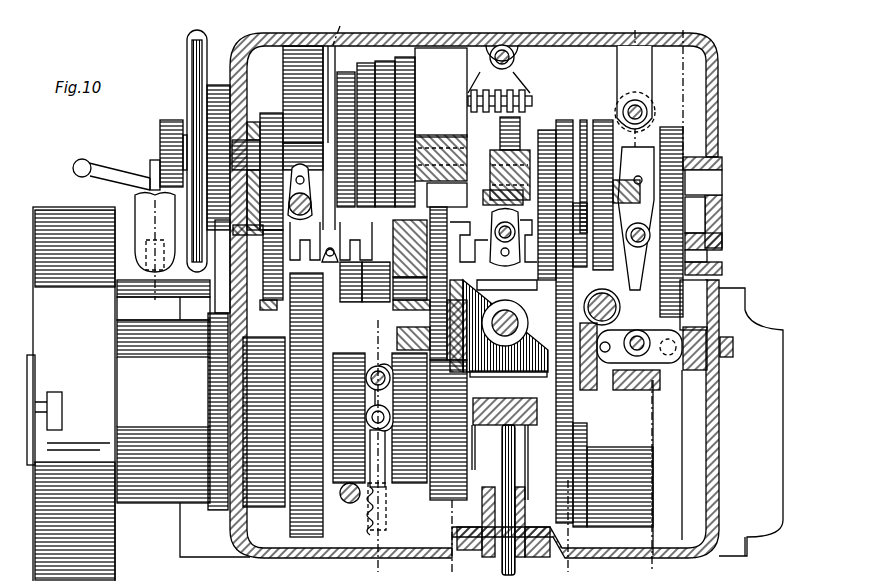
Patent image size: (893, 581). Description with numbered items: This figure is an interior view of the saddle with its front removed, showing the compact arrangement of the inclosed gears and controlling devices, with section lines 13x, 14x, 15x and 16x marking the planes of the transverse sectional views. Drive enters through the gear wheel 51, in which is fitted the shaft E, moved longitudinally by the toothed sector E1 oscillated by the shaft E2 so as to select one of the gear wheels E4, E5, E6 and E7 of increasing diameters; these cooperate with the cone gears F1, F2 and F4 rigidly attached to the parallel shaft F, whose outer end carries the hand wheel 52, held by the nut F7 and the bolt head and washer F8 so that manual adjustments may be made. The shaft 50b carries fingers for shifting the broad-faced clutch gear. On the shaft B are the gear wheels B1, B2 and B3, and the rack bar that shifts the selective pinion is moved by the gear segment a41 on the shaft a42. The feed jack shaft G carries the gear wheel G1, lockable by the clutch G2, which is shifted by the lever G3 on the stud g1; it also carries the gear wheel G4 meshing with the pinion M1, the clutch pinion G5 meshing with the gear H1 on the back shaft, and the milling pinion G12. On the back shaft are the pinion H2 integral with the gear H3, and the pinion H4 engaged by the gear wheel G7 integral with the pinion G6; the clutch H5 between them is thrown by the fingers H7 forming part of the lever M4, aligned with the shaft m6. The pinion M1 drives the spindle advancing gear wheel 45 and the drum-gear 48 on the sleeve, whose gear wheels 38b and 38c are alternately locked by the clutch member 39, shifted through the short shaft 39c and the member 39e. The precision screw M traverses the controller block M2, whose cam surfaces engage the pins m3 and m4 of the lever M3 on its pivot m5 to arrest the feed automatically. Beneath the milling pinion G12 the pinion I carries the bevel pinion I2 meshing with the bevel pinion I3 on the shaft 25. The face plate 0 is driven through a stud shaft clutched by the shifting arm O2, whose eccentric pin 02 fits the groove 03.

The hand wheel 52 is at (190, 50).
The gear wheel 51 is at (297, 80).
The nut F7 is at (170, 137).
The bolt head and washer F8 is at (155, 143).
The shifting arm O2 is at (110, 170).
The face plate 0 is at (71, 394).
The eccentric pin 02 is at (104, 283).
The groove 03 is at (110, 300).
The gear wheel E4 is at (355, 72).
The gear wheel E5 is at (366, 63).
The gear wheel E6 is at (387, 61).
The gear wheel E7 is at (412, 80).
The shaft F is at (298, 168).
The gear F1 is at (400, 96).
The gear F2 is at (403, 118).
The gear F4 is at (400, 153).
The milling pinion G12 is at (441, 133).
The clutch G2 is at (335, 280).
The bevel pinion I3 is at (500, 400).
The pinion I is at (411, 313).
The gear wheel 38c is at (445, 505).
The stud g1 is at (347, 290).
The gear wheel G4 is at (380, 295).
The gear wheel 38b is at (283, 500).
The gear wheel G1 is at (268, 300).
The shaft 50b is at (262, 235).
The short shaft 39c is at (375, 370).
The clutch member 39 is at (370, 400).
The member 39e is at (381, 433).
The section line 13x is at (350, 294).
The section line 15x is at (502, 45).
The section line 14x is at (597, 294).
The section line 16x is at (666, 294).
The shaft E is at (535, 100).
The toothed sector E1 is at (514, 78).
The shaft E2 is at (522, 45).
The gear wheel B1 is at (490, 155).
The gear H1 is at (548, 138).
The gear H3 is at (620, 130).
The pinion H2 is at (582, 237).
The gear wheel B2 is at (573, 120).
The shaft a42 is at (628, 113).
The gear segment a41 is at (650, 135).
The pinion H4 is at (690, 160).
The clutch H5 is at (700, 135).
The gear wheel B3 is at (718, 100).
The fingers H7 is at (722, 165).
The lever M4 is at (722, 190).
The shaft m6 is at (705, 220).
The gear wheel G7 is at (717, 283).
The pin m3 is at (695, 330).
The clutch pinion G5 is at (480, 215).
The lever G3 is at (490, 232).
The pinion G6 is at (602, 300).
The pivot m5 is at (615, 330).
The precision screw M is at (680, 370).
The pinion M1 is at (615, 380).
The controller block M2 is at (640, 365).
The lever M3 is at (660, 400).
The pin m4 is at (605, 355).
The drum-gear 48 is at (620, 520).
The bevel pinion I2 is at (503, 302).
The shaft 25 is at (504, 470).
The spindle advancing gear wheel 45 is at (553, 497).